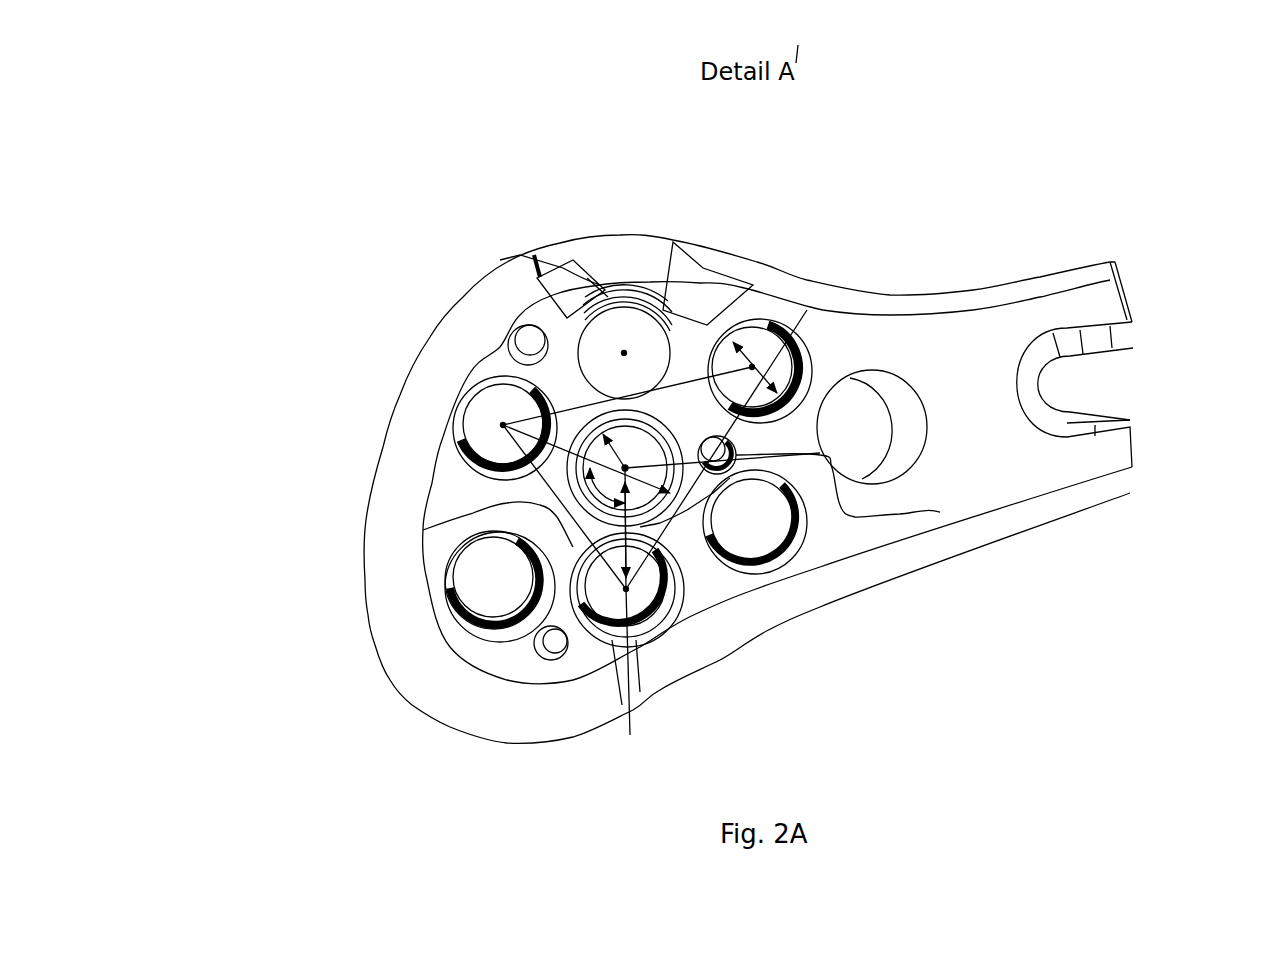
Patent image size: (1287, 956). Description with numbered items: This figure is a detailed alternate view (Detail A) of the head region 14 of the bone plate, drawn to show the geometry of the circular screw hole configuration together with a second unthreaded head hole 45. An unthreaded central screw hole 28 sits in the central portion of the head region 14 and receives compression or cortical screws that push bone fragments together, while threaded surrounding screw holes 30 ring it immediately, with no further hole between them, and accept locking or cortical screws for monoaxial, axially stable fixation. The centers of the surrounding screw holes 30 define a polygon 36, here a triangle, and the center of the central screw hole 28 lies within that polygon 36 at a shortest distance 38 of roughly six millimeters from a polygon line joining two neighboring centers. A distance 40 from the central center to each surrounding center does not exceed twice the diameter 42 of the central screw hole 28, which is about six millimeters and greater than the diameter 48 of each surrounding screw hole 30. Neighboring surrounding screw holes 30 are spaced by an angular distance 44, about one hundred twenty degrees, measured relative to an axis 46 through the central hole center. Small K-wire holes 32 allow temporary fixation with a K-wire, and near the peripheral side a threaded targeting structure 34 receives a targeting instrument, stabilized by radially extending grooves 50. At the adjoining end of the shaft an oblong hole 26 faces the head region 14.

The head region 14 is at (1057, 147).
The oblong hole 26 is at (1090, 383).
The central screw hole 28 is at (585, 432).
The surrounding screw holes 30 is at (470, 432).
The K-wire holes 32 is at (528, 345).
The targeting structure 34 is at (627, 345).
The polygon 36 is at (722, 558).
The distance 38 is at (680, 481).
The distance 40 is at (683, 668).
The diameter 42 is at (940, 512).
The angular distance 44 is at (423, 530).
The second unthreaded head hole 45 is at (897, 380).
The axis 46 is at (503, 425).
The diameter 48 is at (807, 310).
The grooves 50 is at (690, 308).